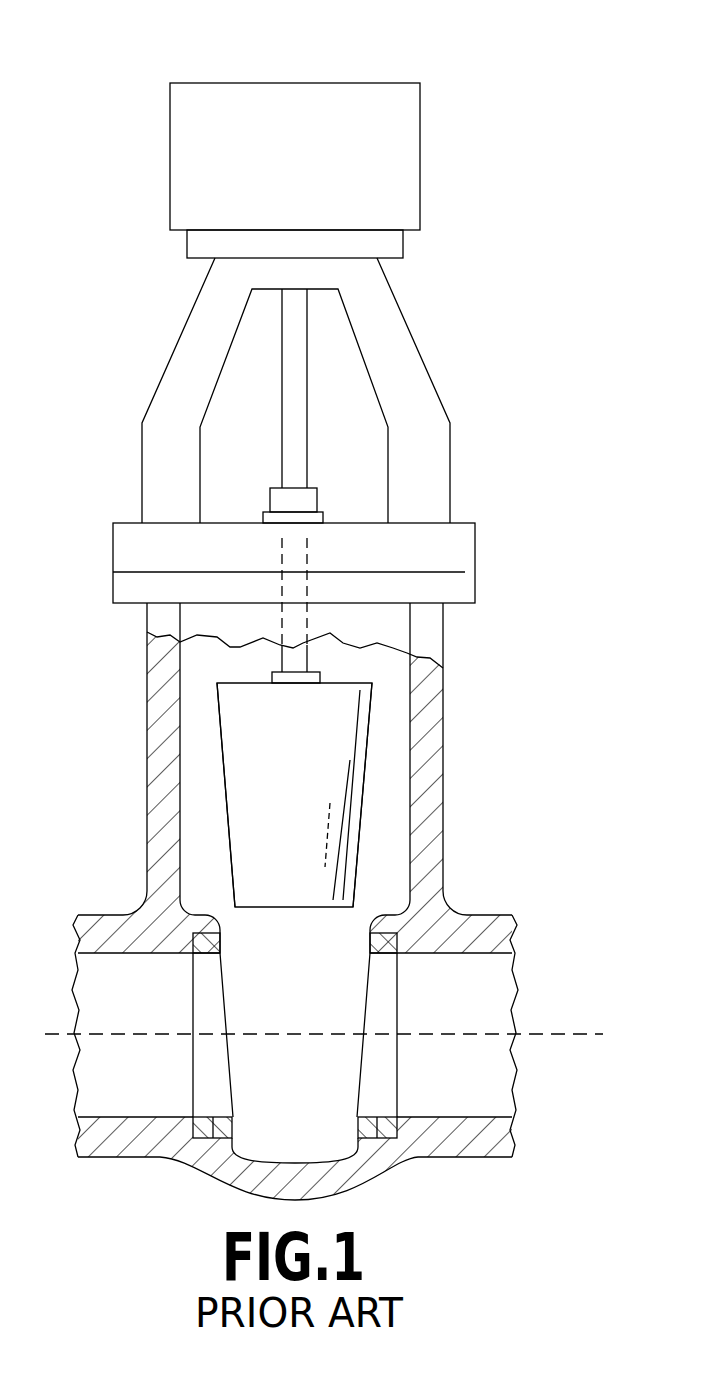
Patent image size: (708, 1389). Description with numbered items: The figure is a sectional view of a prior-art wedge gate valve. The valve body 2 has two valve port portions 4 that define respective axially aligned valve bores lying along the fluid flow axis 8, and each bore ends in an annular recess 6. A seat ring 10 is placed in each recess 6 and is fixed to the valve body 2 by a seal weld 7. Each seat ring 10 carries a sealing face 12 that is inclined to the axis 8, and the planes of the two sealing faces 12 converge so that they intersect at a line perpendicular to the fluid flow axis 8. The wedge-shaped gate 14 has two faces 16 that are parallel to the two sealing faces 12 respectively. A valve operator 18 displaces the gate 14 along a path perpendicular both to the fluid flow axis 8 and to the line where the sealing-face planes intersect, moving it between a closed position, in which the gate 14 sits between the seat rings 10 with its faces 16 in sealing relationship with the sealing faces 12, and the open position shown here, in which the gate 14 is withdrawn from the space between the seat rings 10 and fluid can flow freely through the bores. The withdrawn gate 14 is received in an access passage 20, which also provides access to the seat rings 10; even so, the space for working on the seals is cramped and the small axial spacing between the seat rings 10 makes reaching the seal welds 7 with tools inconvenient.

The valve body 2 is at (128, 717).
The valve port portions 4 is at (117, 927).
The annular recess 6 is at (214, 1115).
The seal weld 7 is at (193, 1003).
The fluid flow axis 8 is at (566, 1033).
The seat ring 10 is at (355, 1130).
The sealing face 12 is at (363, 1055).
The wedge-shaped gate 14 is at (291, 907).
The gate faces 16 is at (225, 793).
The valve operator 18 is at (217, 83).
The access passage 20 is at (390, 740).